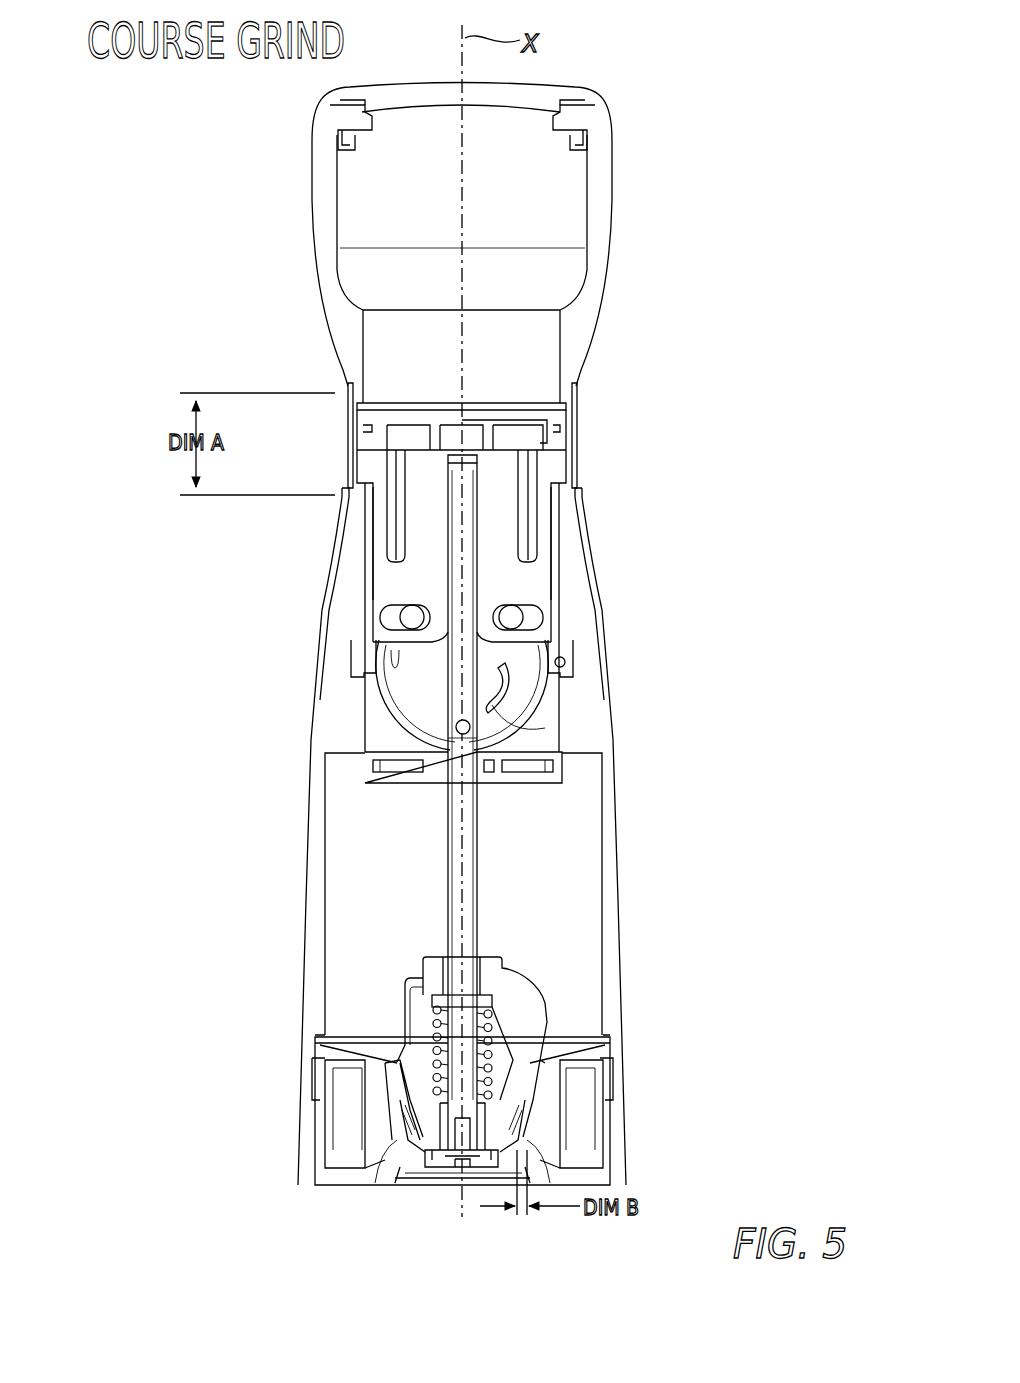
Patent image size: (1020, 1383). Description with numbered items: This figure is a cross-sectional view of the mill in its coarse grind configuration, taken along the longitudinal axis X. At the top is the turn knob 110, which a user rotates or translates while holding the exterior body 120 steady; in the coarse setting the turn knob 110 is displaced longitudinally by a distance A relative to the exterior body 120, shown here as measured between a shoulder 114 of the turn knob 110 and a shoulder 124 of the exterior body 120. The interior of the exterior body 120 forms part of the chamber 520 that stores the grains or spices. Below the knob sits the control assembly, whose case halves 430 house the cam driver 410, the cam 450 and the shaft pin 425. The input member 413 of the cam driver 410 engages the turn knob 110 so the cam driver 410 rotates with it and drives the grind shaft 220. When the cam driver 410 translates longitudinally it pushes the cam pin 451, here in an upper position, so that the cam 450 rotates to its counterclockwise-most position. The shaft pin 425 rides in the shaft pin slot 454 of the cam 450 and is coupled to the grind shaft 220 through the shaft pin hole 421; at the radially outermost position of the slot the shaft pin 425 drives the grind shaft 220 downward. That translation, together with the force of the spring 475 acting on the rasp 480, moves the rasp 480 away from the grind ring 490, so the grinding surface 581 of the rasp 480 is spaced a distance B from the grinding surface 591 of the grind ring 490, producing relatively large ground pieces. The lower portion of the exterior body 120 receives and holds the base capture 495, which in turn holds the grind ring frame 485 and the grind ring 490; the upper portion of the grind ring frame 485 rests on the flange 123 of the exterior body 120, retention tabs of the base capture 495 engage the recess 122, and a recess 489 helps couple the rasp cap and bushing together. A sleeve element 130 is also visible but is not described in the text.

The turn knob 110 is at (630, 220).
The sleeve 130 is at (590, 436).
The exterior body 120 is at (607, 590).
The shoulder 114 is at (350, 395).
The case halves 430 is at (356, 408).
The input member 413 is at (365, 470).
The shoulder 124 is at (350, 495).
The cam driver 410 is at (392, 570).
The cam pin 451 is at (520, 620).
The cam 450 is at (525, 690).
The shaft pin slot 454 is at (553, 723).
The grind shaft 220 is at (445, 862).
The shaft pin hole 421 is at (450, 740).
The shaft pin 425 is at (455, 728).
The chamber 520 is at (582, 882).
The grind ring frame 485 is at (395, 993).
The recess 489 is at (540, 990).
The spring 475 is at (432, 1010).
The rasp 480 is at (400, 1157).
The base capture 495 is at (618, 1165).
The flange 123 is at (605, 1035).
The recess 122 is at (612, 1078).
The grind ring 490 is at (385, 1127).
The grinding surface 591 is at (525, 1138).
The grinding surface 581 is at (477, 1157).